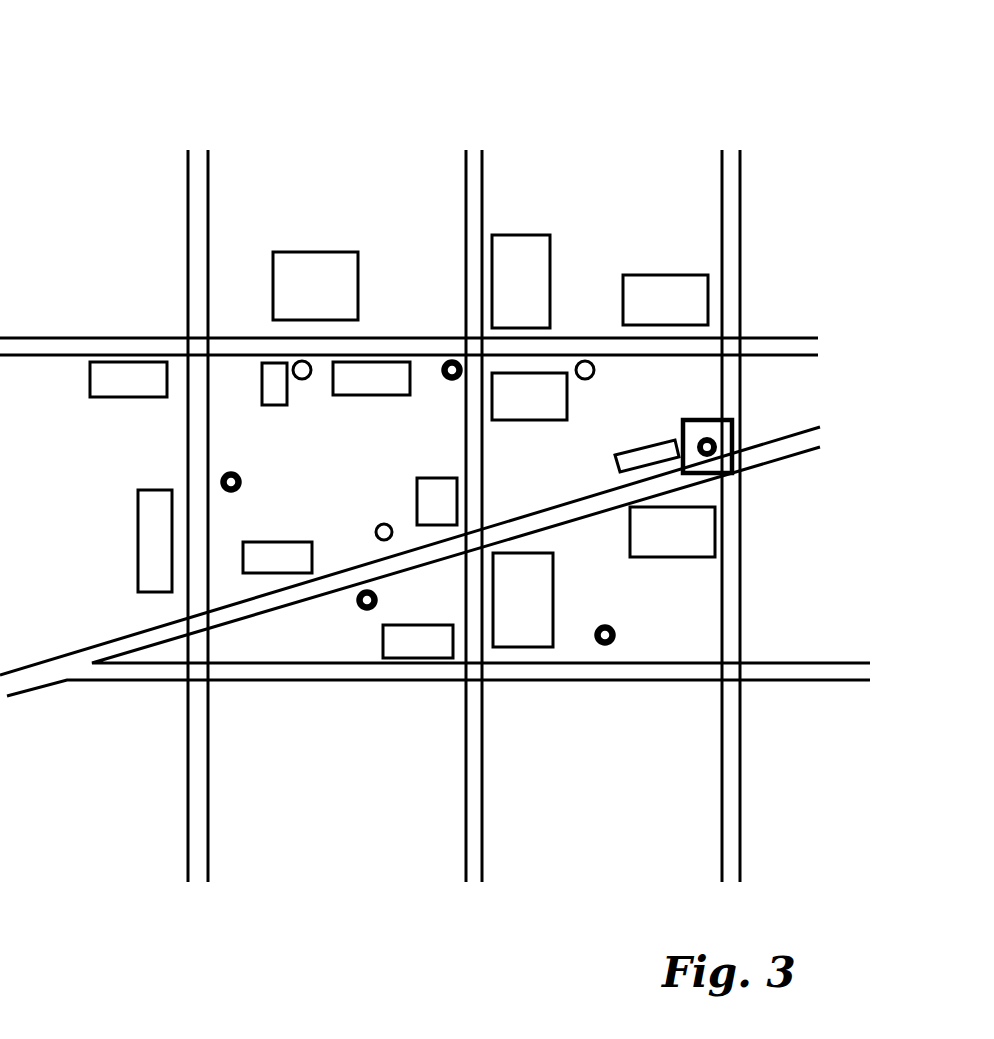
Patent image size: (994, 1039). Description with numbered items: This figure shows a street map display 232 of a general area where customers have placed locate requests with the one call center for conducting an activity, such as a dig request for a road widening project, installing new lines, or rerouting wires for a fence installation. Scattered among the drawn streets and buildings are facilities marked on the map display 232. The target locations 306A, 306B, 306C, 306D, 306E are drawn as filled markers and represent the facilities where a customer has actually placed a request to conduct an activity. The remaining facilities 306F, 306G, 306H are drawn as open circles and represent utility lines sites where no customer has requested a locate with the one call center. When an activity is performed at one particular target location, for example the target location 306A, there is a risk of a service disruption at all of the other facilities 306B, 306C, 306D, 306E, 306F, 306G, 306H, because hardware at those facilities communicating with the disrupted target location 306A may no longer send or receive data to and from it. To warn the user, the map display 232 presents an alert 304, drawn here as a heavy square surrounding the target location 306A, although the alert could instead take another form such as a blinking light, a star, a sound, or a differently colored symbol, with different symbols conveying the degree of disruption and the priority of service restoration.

The map display 232 is at (258, 106).
The alert 304 is at (735, 421).
The target location 306A is at (706, 437).
The target location 306B is at (452, 359).
The target location 306C is at (255, 452).
The target location 306D is at (378, 600).
The target location 306E is at (633, 610).
The facility 306F is at (304, 380).
The facility 306G is at (585, 380).
The facility 306H is at (383, 523).